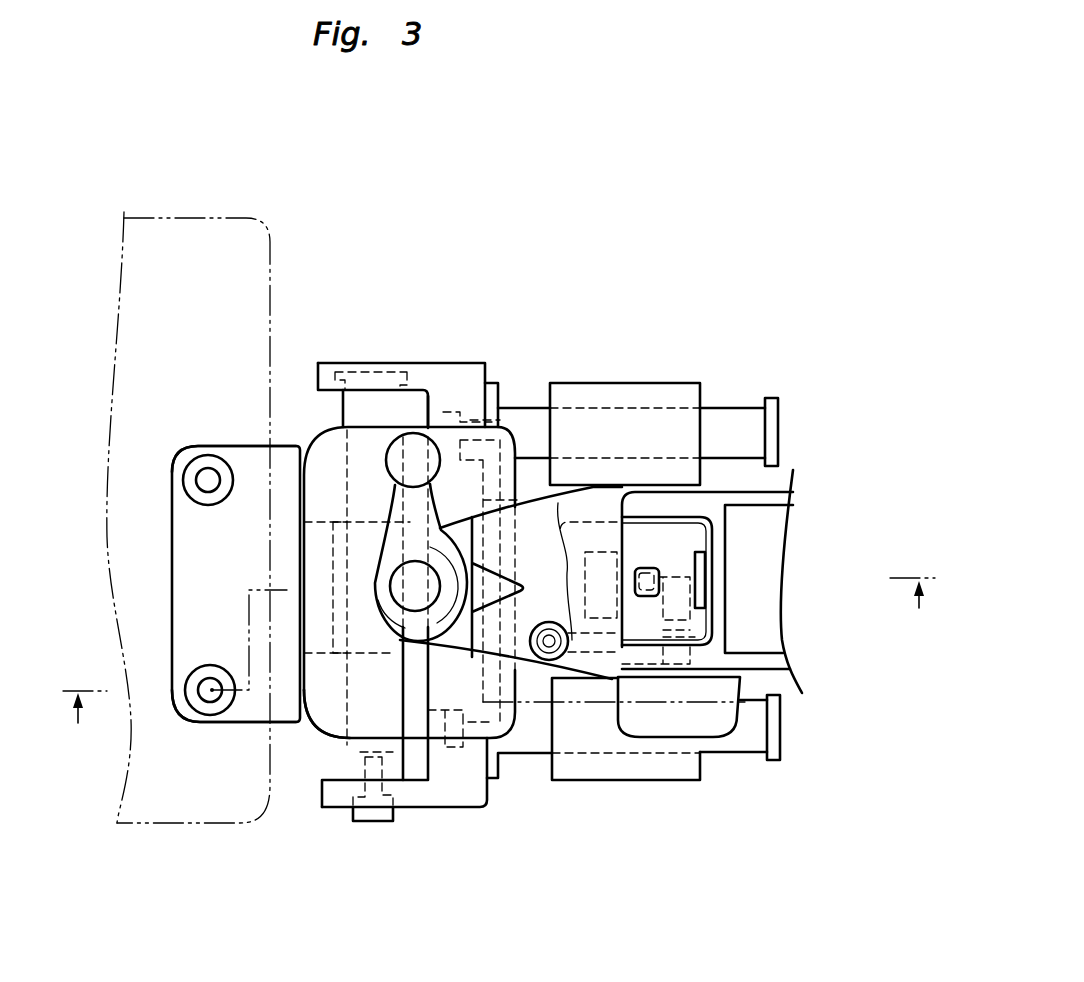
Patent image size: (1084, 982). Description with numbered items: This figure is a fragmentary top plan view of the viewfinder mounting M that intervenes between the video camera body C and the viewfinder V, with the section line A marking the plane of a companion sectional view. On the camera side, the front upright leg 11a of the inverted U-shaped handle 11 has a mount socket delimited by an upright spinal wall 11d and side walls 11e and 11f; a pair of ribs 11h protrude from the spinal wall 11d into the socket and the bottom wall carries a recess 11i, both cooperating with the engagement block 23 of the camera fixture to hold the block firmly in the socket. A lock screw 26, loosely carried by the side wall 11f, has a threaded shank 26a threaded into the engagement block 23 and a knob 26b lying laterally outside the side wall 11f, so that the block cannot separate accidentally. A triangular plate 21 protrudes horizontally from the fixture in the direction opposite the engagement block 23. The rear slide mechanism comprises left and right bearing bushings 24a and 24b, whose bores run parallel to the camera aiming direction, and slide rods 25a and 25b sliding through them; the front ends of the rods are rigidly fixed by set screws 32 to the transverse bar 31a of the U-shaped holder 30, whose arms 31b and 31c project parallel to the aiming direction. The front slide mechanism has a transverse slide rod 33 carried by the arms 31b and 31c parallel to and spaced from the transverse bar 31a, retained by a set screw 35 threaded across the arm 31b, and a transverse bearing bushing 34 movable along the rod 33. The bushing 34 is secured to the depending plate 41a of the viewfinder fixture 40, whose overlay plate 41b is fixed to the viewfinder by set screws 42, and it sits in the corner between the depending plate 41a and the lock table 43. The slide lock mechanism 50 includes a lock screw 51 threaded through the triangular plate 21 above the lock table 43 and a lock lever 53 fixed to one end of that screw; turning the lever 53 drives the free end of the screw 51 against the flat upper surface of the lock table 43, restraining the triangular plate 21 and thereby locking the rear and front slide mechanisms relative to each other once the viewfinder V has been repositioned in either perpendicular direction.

The viewfinder V is at (237, 278).
The viewfinder mounting M is at (569, 360).
The video camera body C is at (722, 547).
The section line A- A is at (499, 669).
The handle 11 is at (785, 684).
The front upright leg 11a is at (714, 626).
The upright spinal wall 11d is at (770, 527).
The side wall 11e is at (668, 500).
The side wall 11f is at (643, 663).
The ribs 11h is at (713, 562).
The recess 11i is at (735, 484).
The triangular plate 21 is at (600, 665).
The engagement block 23 is at (655, 566).
The left bearing bushing 24a is at (653, 782).
The right bearing bushing 24b is at (657, 390).
The slide rod 25a is at (753, 740).
The slide rod 25b is at (735, 412).
The lock screw 26 is at (744, 719).
The threaded shank 26a is at (705, 676).
The knob 26b is at (720, 740).
The holder 30 is at (450, 360).
The transverse bar 31a is at (486, 388).
The arm 31b is at (417, 800).
The arm 31c is at (320, 363).
The set screws 32 is at (460, 412).
The transverse slide rod 33 is at (362, 752).
The transverse bearing bushing 34 is at (335, 583).
The set screw 35 is at (370, 822).
The viewfinder fixture 40 is at (261, 730).
The depending plate 41a is at (287, 470).
The overlay plate 41b is at (237, 712).
The set screws 42 is at (190, 466).
The lock table 43 is at (318, 730).
The slide lock mechanism 50 is at (365, 546).
The lock screw 51 is at (405, 596).
The lock lever 53 is at (413, 457).